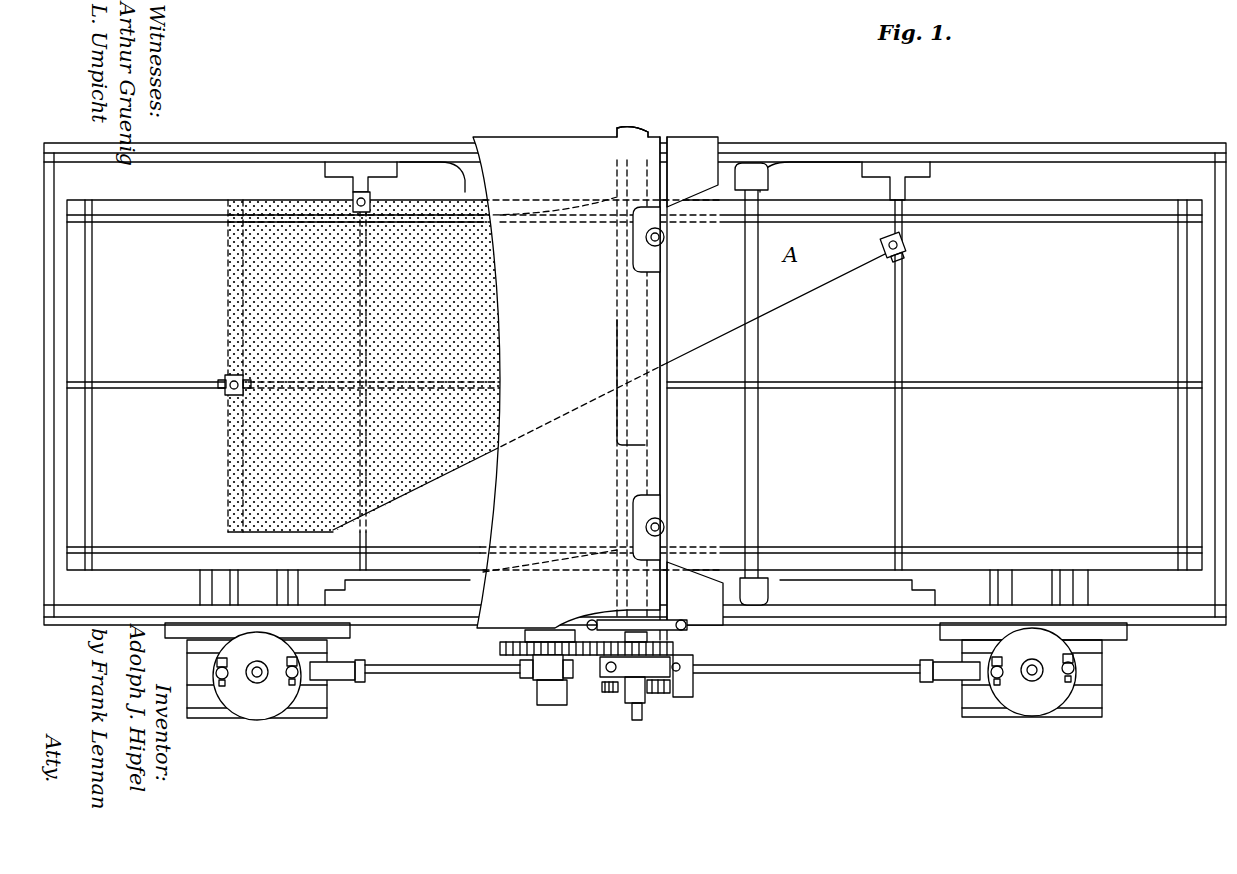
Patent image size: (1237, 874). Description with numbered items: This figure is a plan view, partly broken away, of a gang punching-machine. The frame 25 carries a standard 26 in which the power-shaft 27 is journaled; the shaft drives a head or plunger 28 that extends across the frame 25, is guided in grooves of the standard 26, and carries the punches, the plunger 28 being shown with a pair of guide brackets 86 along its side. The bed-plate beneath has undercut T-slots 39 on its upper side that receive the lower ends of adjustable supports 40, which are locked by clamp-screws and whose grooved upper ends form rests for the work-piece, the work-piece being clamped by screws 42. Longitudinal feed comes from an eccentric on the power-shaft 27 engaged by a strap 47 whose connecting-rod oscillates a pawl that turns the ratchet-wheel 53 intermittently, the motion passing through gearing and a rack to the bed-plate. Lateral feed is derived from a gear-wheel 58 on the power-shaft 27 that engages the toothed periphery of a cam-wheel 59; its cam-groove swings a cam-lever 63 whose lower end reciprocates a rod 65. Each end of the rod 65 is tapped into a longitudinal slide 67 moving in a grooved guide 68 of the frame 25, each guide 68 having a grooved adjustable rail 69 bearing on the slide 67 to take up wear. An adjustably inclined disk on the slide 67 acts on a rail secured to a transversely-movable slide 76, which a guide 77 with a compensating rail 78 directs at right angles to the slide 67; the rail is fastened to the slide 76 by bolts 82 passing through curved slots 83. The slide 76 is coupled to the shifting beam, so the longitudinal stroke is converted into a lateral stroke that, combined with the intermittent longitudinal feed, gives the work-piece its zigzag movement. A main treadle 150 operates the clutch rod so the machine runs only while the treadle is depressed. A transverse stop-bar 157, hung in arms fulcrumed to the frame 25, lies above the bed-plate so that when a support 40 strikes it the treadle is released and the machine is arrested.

The frame 25 is at (897, 142).
The standard 26 is at (598, 377).
The power-shaft 27 is at (640, 134).
The plunger 28 is at (662, 432).
The T-slots 39 is at (915, 380).
The adjustable supports 40 is at (906, 246).
The screws 42 is at (226, 378).
The strap 47 is at (615, 687).
The ratchet-wheel 53 is at (656, 695).
The gear-wheel 58 is at (690, 646).
The cam-wheel 59 is at (505, 648).
The cam-lever 63 is at (545, 682).
The rod 65 is at (432, 672).
The longitudinal slide 67 is at (320, 683).
The grooved guide 68 is at (318, 650).
The adjustable rail 69 is at (314, 700).
The transversely-movable slide 76 is at (644, 674).
The guide 77 is at (273, 593).
The compensating rail 78 is at (218, 586).
The bolts 82 is at (222, 683).
The curved slots 83 is at (215, 662).
The guide bracket 86 is at (664, 242).
The main treadle 150 is at (687, 690).
The stop-bar 157 is at (760, 478).